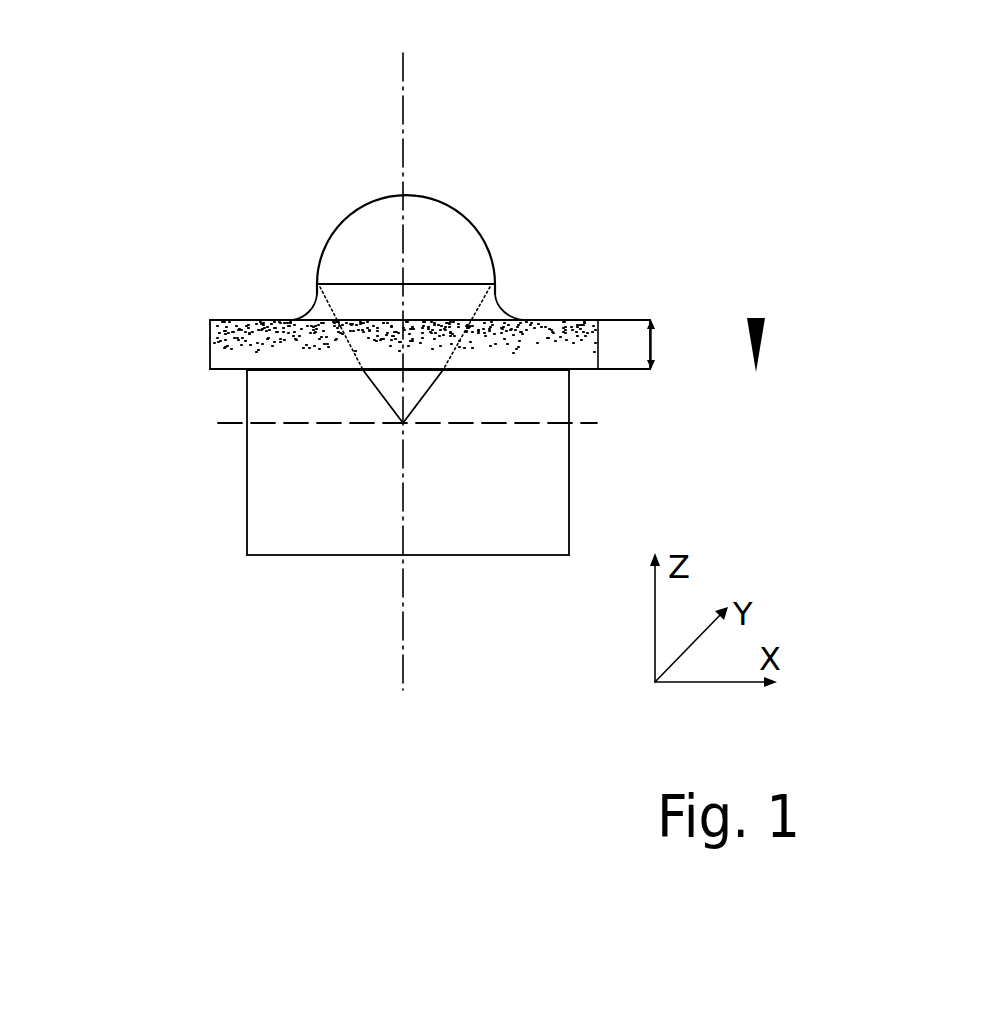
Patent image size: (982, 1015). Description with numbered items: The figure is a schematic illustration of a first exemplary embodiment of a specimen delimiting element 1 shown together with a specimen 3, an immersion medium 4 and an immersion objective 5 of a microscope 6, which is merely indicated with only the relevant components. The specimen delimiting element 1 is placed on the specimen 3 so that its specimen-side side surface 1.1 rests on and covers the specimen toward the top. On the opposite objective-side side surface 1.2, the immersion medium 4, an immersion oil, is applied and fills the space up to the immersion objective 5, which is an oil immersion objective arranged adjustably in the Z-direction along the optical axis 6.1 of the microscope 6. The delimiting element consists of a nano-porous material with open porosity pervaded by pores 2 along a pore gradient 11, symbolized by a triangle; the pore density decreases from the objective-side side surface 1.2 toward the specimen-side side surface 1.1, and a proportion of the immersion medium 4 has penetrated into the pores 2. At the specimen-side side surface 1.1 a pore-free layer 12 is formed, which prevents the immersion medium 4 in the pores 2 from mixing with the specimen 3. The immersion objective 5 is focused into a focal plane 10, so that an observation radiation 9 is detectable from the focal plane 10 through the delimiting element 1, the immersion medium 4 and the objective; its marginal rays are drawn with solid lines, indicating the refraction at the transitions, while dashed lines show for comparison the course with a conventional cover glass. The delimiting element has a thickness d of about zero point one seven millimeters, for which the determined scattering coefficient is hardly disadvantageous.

The specimen delimiting element 1 is at (203, 342).
The specimen-side side surface 1.1 is at (233, 371).
The objective-side side surface 1.2 is at (232, 319).
The pores 2 is at (571, 317).
The specimen 3 is at (270, 463).
The immersion medium 4 is at (320, 305).
The immersion objective 5 is at (368, 221).
The microscope 6 is at (274, 66).
The optical axis 6.1 is at (401, 82).
The observation radiation 9 is at (475, 308).
The focal plane 10 is at (582, 425).
The pore gradient 11 is at (768, 336).
The pore-free layer 12 is at (547, 371).
The thickness d is at (656, 341).